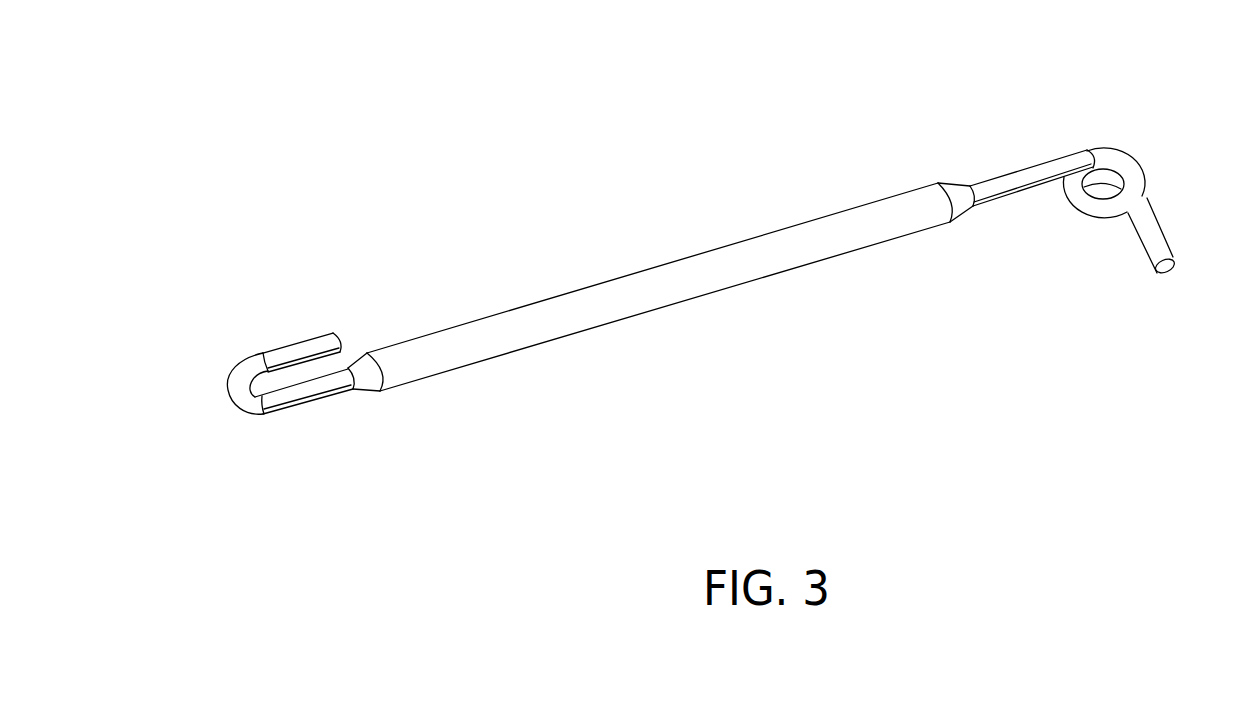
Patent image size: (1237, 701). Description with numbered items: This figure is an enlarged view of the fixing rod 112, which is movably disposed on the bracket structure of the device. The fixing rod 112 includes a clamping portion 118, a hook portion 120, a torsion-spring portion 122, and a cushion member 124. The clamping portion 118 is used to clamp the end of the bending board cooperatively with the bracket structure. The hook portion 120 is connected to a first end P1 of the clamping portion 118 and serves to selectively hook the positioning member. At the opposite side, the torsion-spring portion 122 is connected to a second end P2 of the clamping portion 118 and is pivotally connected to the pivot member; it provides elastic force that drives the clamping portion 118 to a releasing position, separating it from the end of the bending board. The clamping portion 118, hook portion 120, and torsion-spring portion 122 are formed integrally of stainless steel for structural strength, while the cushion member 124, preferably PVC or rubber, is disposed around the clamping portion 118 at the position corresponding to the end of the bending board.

The fixing rod 112 is at (518, 70).
The hook portion 120 is at (297, 353).
The cushion member 124 is at (755, 255).
The clamping portion 118 is at (992, 190).
The torsion-spring portion 122 is at (1123, 163).
The first end P1 is at (280, 398).
The second end P2 is at (1082, 160).